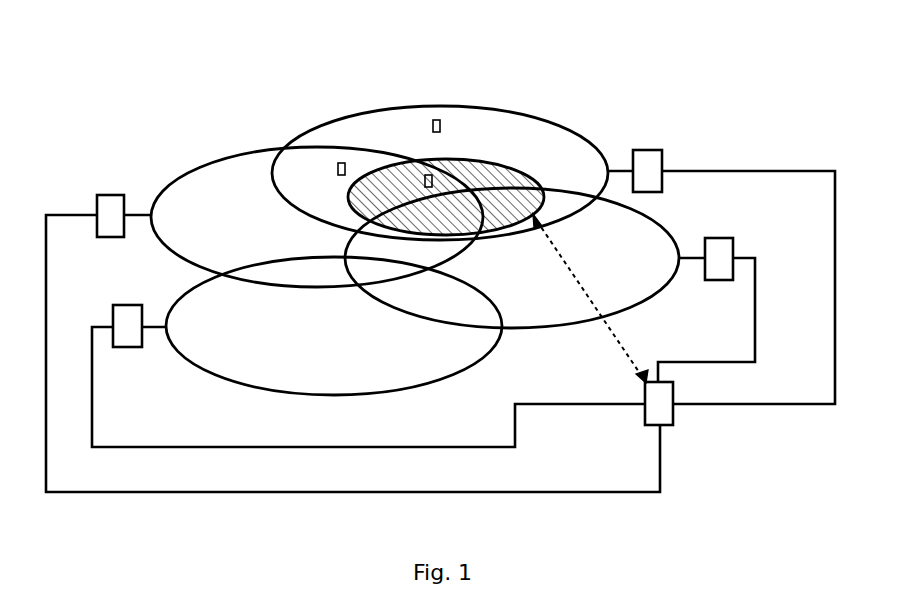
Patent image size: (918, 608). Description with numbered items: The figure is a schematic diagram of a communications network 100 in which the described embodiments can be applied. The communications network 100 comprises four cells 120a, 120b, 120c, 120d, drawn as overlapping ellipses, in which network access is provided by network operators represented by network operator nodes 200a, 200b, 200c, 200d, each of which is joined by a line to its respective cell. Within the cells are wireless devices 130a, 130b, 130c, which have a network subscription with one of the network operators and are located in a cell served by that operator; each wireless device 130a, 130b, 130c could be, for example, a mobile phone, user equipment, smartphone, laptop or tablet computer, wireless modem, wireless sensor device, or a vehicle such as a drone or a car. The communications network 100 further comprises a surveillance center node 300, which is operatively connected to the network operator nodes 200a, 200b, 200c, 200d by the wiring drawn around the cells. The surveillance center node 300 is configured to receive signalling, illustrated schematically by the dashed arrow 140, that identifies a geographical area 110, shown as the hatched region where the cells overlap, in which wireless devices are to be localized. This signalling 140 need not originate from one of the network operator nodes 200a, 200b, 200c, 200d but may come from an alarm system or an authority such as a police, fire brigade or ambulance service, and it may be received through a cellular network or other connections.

The communications network 100 is at (746, 75).
The geographical area 110 is at (490, 157).
The cell 120a is at (465, 107).
The cell 120b is at (540, 328).
The cell 120c is at (220, 163).
The cell 120d is at (213, 375).
The wireless device 130a is at (426, 175).
The wireless device 130b is at (433, 120).
The wireless device 130c is at (338, 162).
The signalling 140 is at (617, 338).
The network operator node 200a is at (645, 150).
The network operator node 200b is at (733, 238).
The network operator node 200c is at (108, 195).
The network operator node 200d is at (116, 308).
The surveillance center node 300 is at (673, 425).